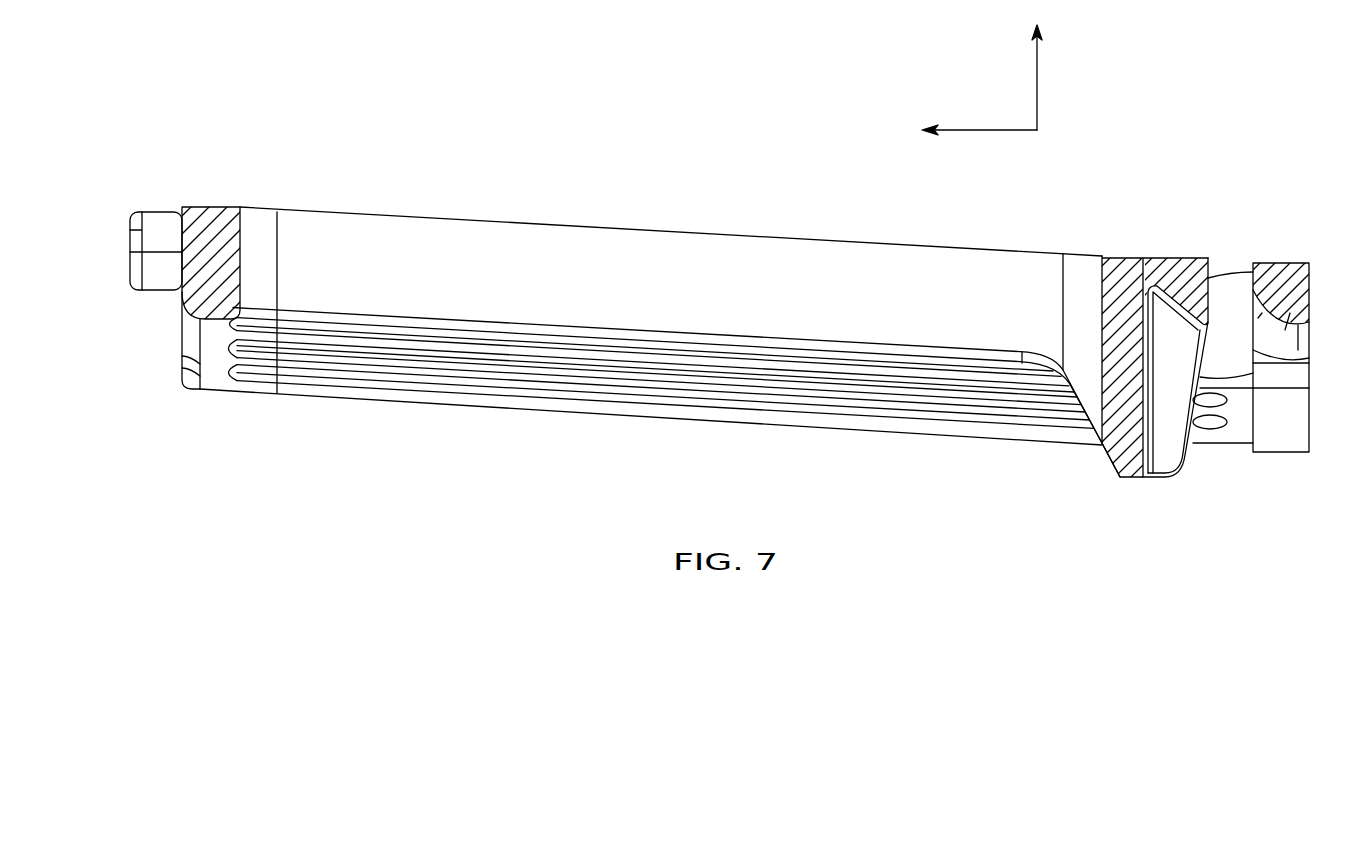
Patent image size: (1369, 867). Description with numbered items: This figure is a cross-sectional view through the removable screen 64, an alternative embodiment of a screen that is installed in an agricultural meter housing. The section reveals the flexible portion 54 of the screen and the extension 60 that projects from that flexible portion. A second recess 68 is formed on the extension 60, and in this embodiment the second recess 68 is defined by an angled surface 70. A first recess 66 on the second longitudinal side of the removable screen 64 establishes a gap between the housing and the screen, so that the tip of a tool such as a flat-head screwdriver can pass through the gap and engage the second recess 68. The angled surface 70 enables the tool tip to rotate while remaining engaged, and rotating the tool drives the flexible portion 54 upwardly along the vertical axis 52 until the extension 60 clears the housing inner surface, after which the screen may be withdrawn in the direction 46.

The longitudinal direction 46 is at (985, 130).
The vertical axis 52 is at (1037, 80).
The flexible portion 54 is at (980, 328).
The extension 60 is at (1122, 478).
The removable screen 64 is at (820, 165).
The first recess 66 is at (1300, 345).
The second recess 68 is at (1167, 378).
The angled surface 70 is at (1168, 323).